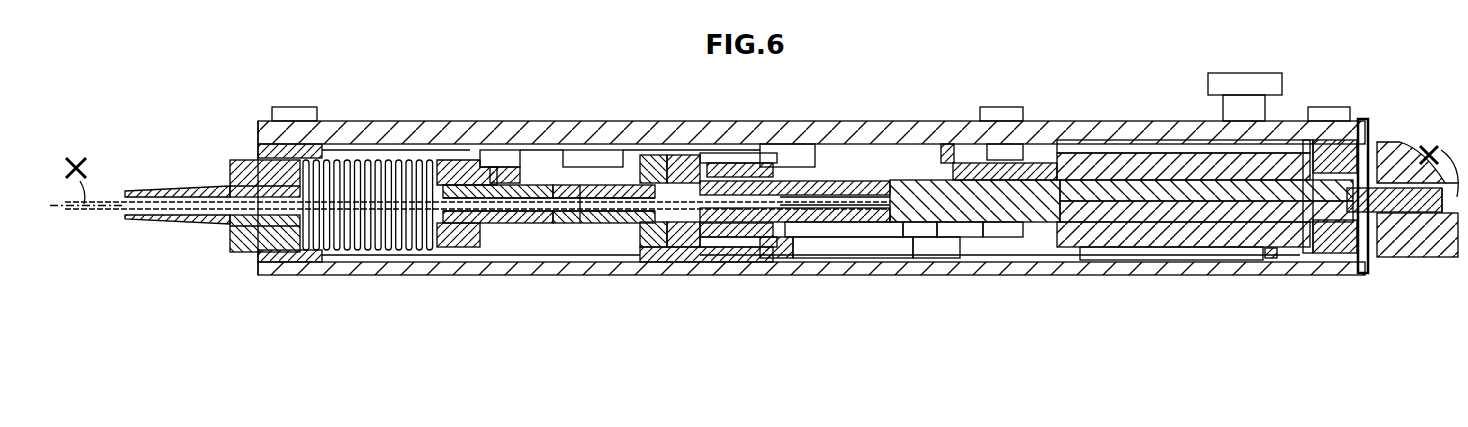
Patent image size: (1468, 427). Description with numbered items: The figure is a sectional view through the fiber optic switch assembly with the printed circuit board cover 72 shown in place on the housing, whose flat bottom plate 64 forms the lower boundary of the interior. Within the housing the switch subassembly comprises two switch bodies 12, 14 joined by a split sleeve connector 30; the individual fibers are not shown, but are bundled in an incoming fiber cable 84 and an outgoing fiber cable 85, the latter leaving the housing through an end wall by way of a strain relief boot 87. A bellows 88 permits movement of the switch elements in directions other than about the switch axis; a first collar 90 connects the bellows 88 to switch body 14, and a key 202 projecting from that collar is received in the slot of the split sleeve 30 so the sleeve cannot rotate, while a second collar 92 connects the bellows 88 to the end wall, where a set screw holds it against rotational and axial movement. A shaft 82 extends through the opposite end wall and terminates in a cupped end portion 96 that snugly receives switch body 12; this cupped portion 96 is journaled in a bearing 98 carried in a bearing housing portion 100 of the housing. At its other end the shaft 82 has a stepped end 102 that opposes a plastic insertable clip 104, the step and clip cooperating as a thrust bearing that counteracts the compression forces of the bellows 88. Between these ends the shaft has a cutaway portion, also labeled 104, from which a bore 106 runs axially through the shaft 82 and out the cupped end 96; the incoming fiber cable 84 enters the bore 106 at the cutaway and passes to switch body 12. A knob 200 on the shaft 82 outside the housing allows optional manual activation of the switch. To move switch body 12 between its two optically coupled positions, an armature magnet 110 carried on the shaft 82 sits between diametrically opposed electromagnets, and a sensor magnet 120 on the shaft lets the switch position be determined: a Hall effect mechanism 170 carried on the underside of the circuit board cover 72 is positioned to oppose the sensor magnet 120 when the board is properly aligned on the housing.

The switch body 12 is at (600, 214).
The switch body 14 is at (547, 215).
The split sleeve connector 30 is at (541, 185).
The flat bottom plate 64 is at (470, 276).
The printed circuit board cover 72 is at (1063, 120).
The shaft 82 is at (973, 203).
The incoming fiber cable 84 is at (753, 197).
The outgoing fiber cable 85 is at (97, 211).
The strain relief boot 87 is at (186, 222).
The bellows 88 is at (384, 250).
The first collar 90 is at (465, 160).
The second collar 92 is at (247, 252).
The cupped end portion 96 is at (663, 172).
The bearing 98 is at (668, 247).
The bearing housing portion 100 is at (678, 163).
The stepped end 102 is at (1358, 222).
The insertable clip 104 is at (833, 206).
The bore 106 is at (740, 222).
The armature magnet 110 is at (1130, 165).
The sensor magnet 120 is at (960, 168).
The Hall effect mechanism 170 is at (943, 148).
The knob 200 is at (1427, 258).
The key 202 is at (503, 168).